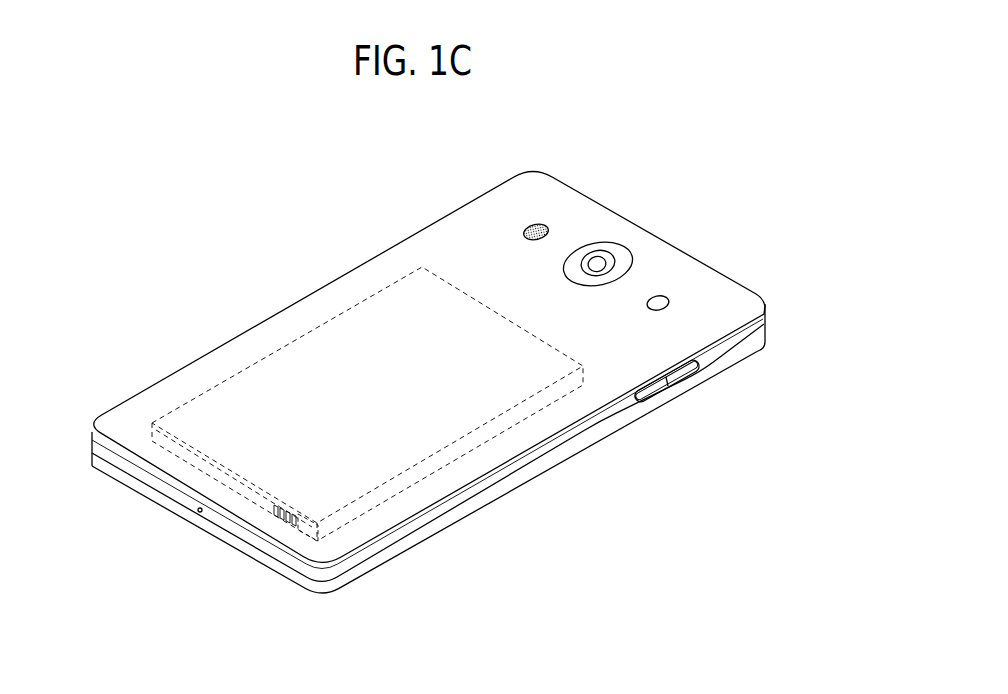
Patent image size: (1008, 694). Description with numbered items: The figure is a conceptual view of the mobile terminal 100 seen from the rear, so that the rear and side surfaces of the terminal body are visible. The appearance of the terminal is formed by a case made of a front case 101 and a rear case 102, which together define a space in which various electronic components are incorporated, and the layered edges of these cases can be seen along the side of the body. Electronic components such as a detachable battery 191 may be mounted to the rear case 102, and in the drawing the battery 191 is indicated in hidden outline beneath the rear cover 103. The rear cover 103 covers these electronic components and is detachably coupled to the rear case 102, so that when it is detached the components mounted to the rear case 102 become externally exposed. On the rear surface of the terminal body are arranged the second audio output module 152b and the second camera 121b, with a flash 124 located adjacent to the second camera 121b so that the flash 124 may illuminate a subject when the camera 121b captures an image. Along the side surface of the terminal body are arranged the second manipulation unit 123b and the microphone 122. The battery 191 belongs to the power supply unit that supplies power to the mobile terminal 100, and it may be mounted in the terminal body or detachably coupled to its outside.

The mobile terminal 100 is at (303, 247).
The front case 101 is at (762, 340).
The rear case 102 is at (762, 322).
The rear cover 103 is at (764, 300).
The second camera 121b is at (602, 262).
The microphone 122 is at (198, 513).
The second manipulation unit 123b is at (655, 392).
The flash 124 is at (665, 300).
The second audio output module 152b is at (544, 223).
The battery 191 is at (457, 457).